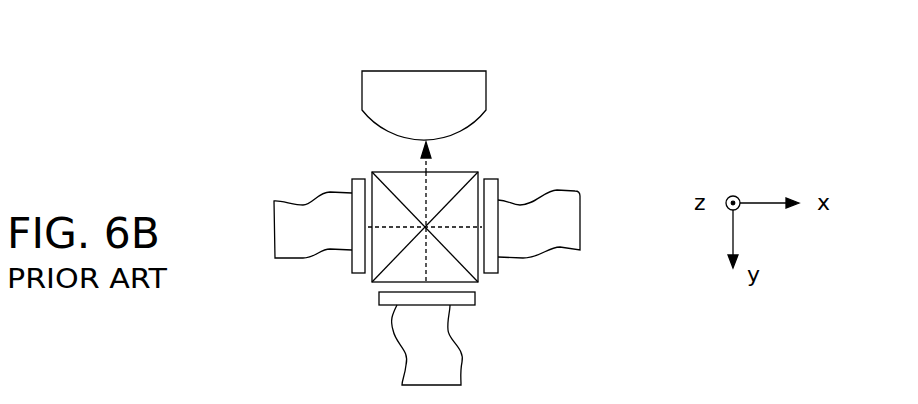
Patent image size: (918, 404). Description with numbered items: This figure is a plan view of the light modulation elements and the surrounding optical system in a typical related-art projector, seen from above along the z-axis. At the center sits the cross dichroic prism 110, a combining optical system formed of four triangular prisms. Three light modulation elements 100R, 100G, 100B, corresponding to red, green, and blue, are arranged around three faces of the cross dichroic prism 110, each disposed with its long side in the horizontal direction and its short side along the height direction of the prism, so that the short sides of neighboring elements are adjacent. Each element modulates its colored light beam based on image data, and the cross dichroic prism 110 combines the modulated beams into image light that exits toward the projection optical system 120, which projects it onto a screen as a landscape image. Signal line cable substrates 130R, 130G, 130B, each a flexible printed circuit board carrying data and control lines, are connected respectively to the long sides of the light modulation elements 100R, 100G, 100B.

The cross dichroic prism 110 is at (384, 176).
The projection optical system 120 is at (486, 76).
The light modulation element 100R is at (357, 273).
The light modulation element 100G is at (475, 300).
The light modulation element 100B is at (490, 178).
The signal line cable substrate 130R is at (288, 258).
The signal line cable substrate 130G is at (462, 357).
The signal line cable substrate 130B is at (575, 190).